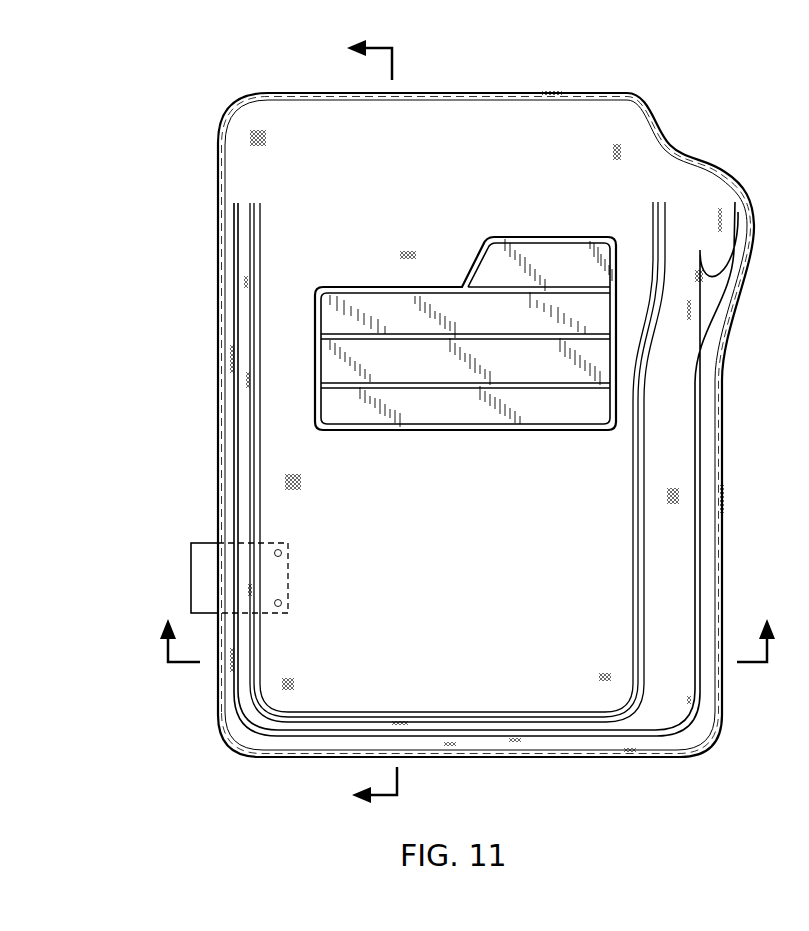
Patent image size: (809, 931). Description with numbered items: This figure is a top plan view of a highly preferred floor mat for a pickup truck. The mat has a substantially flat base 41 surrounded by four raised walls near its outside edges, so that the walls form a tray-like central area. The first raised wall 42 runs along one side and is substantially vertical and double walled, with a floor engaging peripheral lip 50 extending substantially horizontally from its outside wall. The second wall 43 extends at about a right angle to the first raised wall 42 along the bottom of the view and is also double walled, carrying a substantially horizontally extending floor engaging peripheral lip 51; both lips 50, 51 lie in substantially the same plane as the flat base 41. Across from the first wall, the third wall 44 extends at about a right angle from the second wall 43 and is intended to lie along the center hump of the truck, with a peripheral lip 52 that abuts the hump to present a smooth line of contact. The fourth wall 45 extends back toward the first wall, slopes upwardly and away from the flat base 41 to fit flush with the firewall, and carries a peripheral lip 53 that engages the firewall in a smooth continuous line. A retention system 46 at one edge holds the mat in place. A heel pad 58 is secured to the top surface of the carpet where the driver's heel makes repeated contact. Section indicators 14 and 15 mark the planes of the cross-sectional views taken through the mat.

The section line 14- 14 is at (350, 426).
The section line 15- 15 is at (465, 621).
The flat base 41 is at (476, 552).
The first raised wall 42 is at (248, 410).
The second wall 43 is at (565, 725).
The third wall 44 is at (688, 500).
The fourth wall 45 is at (522, 113).
The retention system 46 is at (180, 552).
The floor engaging peripheral lip 50 is at (218, 462).
The floor engaging peripheral lip 51 is at (628, 758).
The peripheral lip 52 is at (723, 414).
The peripheral lip 53 is at (608, 93).
The heel pad 58 is at (508, 332).